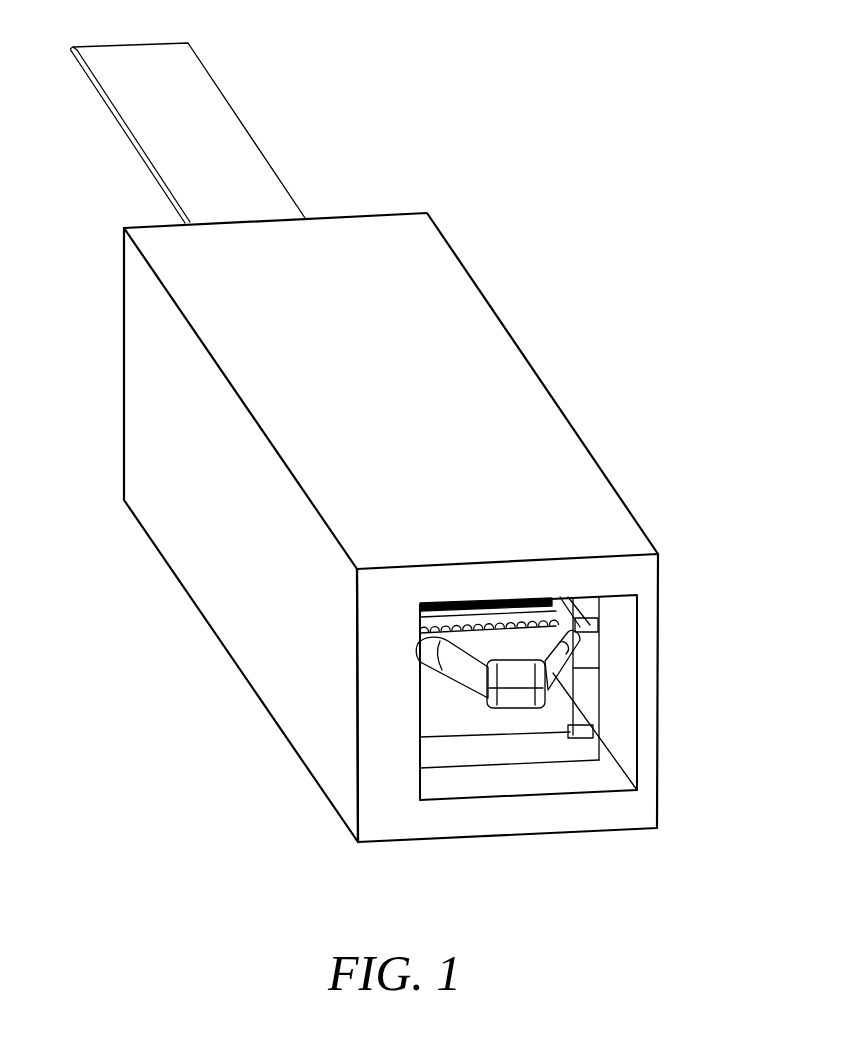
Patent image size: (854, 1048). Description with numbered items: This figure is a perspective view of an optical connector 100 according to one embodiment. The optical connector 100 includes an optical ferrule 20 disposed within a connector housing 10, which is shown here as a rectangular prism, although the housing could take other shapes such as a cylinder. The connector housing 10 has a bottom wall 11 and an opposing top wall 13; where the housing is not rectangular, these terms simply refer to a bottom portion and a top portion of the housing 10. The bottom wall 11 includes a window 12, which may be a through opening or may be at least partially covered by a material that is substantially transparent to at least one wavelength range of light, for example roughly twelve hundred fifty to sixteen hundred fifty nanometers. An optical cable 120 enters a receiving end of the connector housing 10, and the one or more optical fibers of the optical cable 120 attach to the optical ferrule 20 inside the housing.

The optical connector 100 is at (398, 470).
The connector housing 10 is at (468, 330).
The bottom wall 11 is at (545, 777).
The window 12 is at (545, 747).
The top wall 13 is at (566, 473).
The optical ferrule 20 is at (468, 640).
The optical cable 120 is at (215, 117).